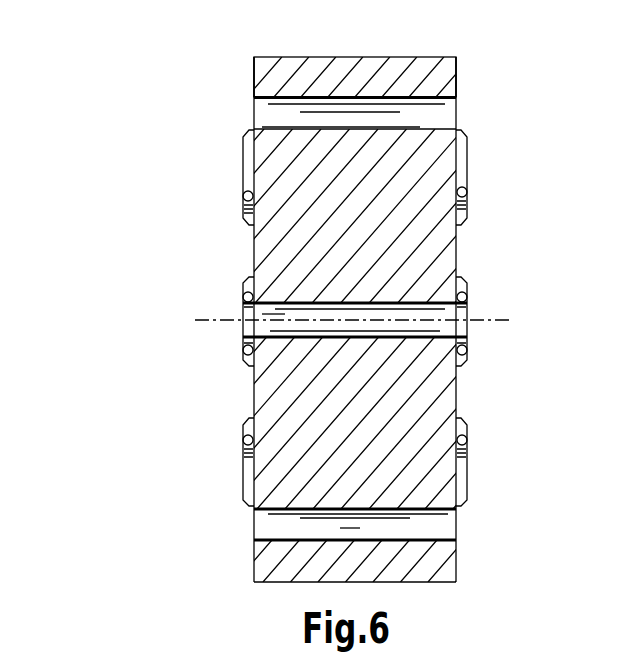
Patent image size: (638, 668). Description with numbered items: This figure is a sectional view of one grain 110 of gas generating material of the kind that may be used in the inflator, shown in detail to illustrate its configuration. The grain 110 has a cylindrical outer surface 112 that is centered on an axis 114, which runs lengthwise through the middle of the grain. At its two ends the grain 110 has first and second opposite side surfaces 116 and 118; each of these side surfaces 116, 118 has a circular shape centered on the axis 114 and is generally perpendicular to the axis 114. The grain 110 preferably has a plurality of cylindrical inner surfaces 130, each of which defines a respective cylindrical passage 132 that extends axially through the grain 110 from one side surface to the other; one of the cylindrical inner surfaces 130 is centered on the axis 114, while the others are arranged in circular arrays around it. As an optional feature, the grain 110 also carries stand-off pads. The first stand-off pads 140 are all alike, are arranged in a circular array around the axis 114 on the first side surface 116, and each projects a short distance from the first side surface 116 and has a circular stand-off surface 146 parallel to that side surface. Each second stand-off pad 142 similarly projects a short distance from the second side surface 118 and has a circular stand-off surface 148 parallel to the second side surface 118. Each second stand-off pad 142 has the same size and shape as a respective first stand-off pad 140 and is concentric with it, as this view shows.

The grain of gas generating material 110 is at (103, 77).
The cylindrical outer surface 112 is at (356, 57).
The axis 114 is at (198, 318).
The first side surface 116 is at (253, 72).
The second side surface 118 is at (457, 79).
The cylindrical inner surface 130 is at (256, 127).
The cylindrical passage 132 is at (235, 105).
The first stand-off pad 140 is at (221, 161).
The second stand-off pad 142 is at (490, 151).
The circular stand-off surface 146 is at (252, 189).
The circular stand-off surface 148 is at (467, 189).